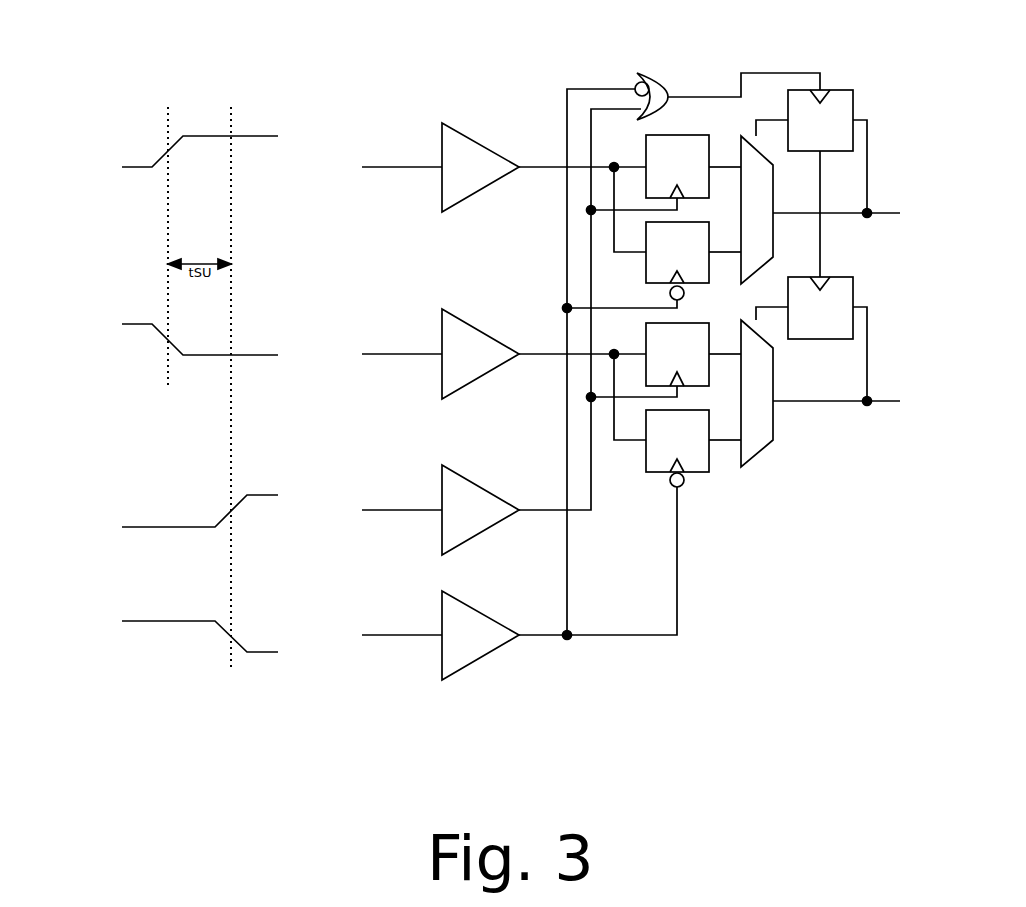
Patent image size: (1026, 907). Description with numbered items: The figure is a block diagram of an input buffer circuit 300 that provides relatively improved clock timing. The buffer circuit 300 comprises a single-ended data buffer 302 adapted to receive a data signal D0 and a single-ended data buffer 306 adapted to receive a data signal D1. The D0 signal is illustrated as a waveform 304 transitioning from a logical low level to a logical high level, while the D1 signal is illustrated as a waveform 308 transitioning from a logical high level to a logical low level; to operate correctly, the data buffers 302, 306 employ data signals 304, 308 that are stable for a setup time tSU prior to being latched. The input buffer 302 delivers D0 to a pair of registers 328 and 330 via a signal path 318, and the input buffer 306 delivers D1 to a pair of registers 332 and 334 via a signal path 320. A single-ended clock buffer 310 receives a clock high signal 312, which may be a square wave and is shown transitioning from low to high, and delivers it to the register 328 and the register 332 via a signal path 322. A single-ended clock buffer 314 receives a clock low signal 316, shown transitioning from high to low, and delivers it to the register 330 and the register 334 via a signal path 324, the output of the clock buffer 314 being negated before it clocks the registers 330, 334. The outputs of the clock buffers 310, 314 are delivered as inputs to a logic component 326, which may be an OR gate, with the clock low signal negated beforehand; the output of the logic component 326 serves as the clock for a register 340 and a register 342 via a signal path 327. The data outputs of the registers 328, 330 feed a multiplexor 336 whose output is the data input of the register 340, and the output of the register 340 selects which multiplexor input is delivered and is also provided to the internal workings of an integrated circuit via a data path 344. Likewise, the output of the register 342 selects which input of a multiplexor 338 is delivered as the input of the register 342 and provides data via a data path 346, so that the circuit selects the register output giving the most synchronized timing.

The buffer circuit 300 is at (598, 727).
The single-ended data buffer 302 is at (480, 167).
The waveform 304 is at (137, 167).
The single-ended data buffer 306 is at (480, 354).
The waveform 308 is at (137, 324).
The single-ended clock buffer 310 is at (480, 510).
The clock high signal 312 is at (137, 527).
The single-ended clock buffer 314 is at (480, 635).
The clock low signal 316 is at (128, 621).
The signal path 318 is at (550, 167).
The signal path 320 is at (547, 354).
The signal path 322 is at (548, 510).
The signal path 324 is at (552, 635).
The logic component 326 is at (648, 73).
The signal path 327 is at (780, 73).
The register 328 is at (693, 166).
The register 330 is at (693, 261).
The register 332 is at (693, 354).
The register 334 is at (693, 448).
The multiplexor 336 is at (757, 210).
The multiplexor 338 is at (757, 393).
The register 340 is at (811, 151).
The register 342 is at (811, 339).
The data path 344 is at (889, 213).
The data path 346 is at (889, 401).